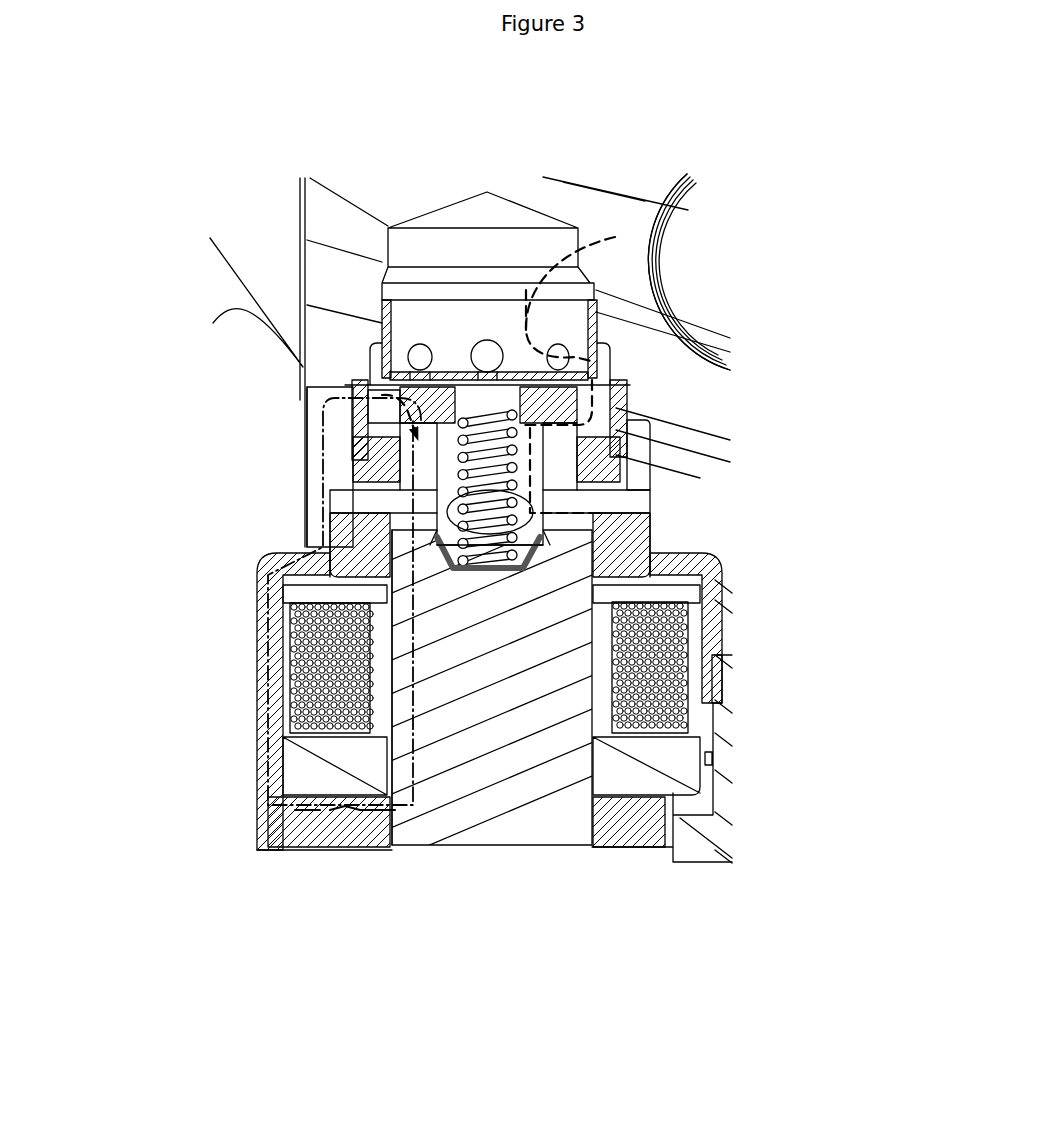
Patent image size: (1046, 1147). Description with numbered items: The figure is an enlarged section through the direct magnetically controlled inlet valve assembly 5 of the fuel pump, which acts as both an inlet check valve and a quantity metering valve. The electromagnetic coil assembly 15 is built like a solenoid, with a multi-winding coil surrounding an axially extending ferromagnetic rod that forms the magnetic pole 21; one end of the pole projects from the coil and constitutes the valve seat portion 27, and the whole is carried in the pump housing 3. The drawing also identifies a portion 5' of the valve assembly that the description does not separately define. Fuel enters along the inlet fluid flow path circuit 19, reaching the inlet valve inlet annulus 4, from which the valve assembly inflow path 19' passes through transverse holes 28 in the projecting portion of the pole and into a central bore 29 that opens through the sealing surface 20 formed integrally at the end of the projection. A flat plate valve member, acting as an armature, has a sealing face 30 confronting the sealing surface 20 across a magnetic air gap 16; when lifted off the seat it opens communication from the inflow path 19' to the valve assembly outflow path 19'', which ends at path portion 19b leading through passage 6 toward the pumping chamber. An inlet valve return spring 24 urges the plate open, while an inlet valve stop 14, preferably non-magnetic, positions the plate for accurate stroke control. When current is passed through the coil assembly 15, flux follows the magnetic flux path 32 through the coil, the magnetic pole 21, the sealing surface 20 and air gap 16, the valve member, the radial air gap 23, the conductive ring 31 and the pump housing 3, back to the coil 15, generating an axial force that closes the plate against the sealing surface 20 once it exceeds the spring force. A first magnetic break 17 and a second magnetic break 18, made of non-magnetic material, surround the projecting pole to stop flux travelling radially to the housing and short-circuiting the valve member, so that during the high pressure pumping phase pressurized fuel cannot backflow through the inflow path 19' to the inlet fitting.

The pump housing 3 is at (305, 398).
The inlet valve inlet annulus 4 is at (652, 500).
The inlet valve assembly 5 is at (634, 483).
The valve body wall 5' is at (559, 361).
The passage 6 is at (520, 247).
The inlet valve stop 14 is at (450, 372).
The electromagnetic coil assembly 15 is at (245, 710).
The magnetic air gap 16 is at (407, 430).
The first magnetic break 17 is at (652, 540).
The second magnetic break 18 is at (347, 468).
The inlet fluid flow path circuit 19 is at (728, 263).
The valve assembly inflow path 19' is at (703, 443).
The valve assembly outflow path 19'' is at (645, 284).
The path portion 19b is at (585, 245).
The sealing surface 20 is at (442, 468).
The magnetic pole 21 is at (518, 848).
The radial air gap 23 is at (378, 403).
The inlet valve return spring 24 is at (520, 548).
The valve seat portion 27 is at (573, 457).
The transverse holes 28 is at (378, 508).
The central bore 29 is at (407, 430).
The sealing face 30 is at (392, 425).
The conductive ring 31 is at (628, 410).
The magnetic flux path 32 is at (355, 815).